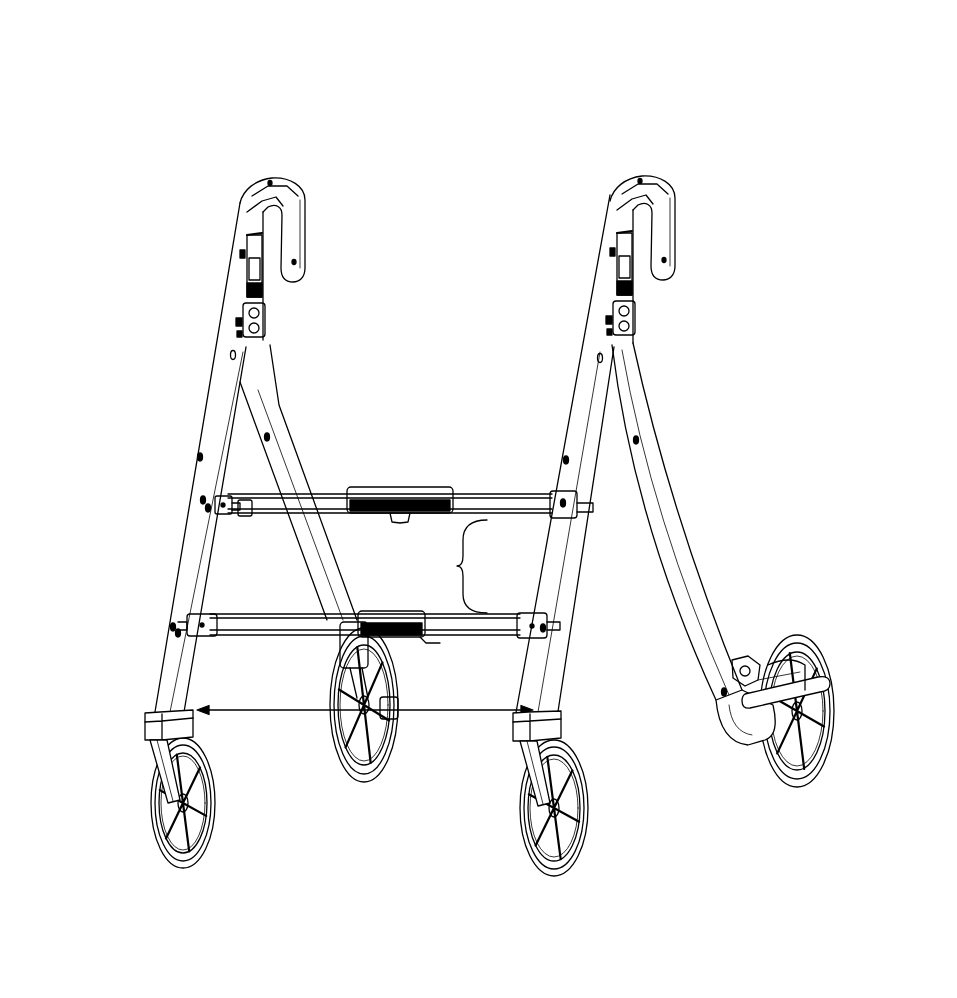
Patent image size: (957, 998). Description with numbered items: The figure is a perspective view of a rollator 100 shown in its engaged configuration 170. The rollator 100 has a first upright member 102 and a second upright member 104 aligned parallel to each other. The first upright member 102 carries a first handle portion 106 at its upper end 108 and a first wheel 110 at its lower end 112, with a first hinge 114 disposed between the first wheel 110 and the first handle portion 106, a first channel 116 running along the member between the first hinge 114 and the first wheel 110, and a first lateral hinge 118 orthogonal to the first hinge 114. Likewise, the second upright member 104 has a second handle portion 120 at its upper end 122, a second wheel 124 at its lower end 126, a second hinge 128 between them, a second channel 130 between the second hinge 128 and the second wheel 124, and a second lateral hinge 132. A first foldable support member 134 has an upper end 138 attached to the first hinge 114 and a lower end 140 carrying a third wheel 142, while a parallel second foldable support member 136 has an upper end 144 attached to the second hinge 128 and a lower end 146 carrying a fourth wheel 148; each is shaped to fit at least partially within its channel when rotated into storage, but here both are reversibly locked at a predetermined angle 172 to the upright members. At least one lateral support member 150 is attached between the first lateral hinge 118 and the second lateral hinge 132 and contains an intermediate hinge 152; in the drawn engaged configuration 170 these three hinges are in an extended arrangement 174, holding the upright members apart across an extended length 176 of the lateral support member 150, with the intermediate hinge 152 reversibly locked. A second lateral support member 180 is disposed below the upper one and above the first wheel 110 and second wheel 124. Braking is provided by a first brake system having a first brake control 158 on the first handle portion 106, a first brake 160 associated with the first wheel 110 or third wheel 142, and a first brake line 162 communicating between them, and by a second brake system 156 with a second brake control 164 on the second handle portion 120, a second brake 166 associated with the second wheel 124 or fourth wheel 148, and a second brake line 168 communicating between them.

The rollator 100 is at (143, 160).
The first upright member 102 is at (568, 425).
The second upright member 104 is at (197, 477).
The first handle portion 106 is at (688, 213).
The upper end of the first upright member 108 is at (601, 190).
The first wheel 110 is at (590, 830).
The lower end of the first upright member 112 is at (577, 707).
The first hinge 114 is at (597, 360).
The first channel 116 is at (587, 568).
The first lateral hinge 118 is at (553, 520).
The second handle portion 120 is at (278, 183).
The upper end of the second upright member 122 is at (228, 207).
The second wheel 124 is at (155, 848).
The lower end of the second upright member 126 is at (141, 705).
The second hinge 128 is at (230, 354).
The second channel 130 is at (215, 556).
The second lateral hinge 132 is at (237, 513).
The first foldable support member 134 is at (680, 497).
The second foldable support member 136 is at (333, 553).
The upper end of the first foldable support member 138 is at (651, 377).
The lower end of the first foldable support member 140 is at (734, 750).
The third wheel 142 is at (823, 767).
The upper end of the second foldable support member 144 is at (283, 372).
The lower end of the second foldable support member 146 is at (498, 724).
The fourth wheel 148 is at (368, 783).
The lateral support member 150 is at (523, 490).
The intermediate hinge 152 is at (400, 490).
The second brake system 156 is at (246, 265).
The first brake control 158 is at (578, 263).
The first brake 160 is at (787, 632).
The first brake line 162 is at (737, 660).
The second brake control 164 is at (247, 235).
The second brake 166 is at (582, 802).
The second brake line 168 is at (567, 740).
The engaged configuration 170 is at (643, 57).
The predetermined angle 172 is at (640, 492).
The extended arrangement 174 is at (451, 566).
The extended length 176 is at (325, 710).
The second lateral support member 180 is at (426, 642).